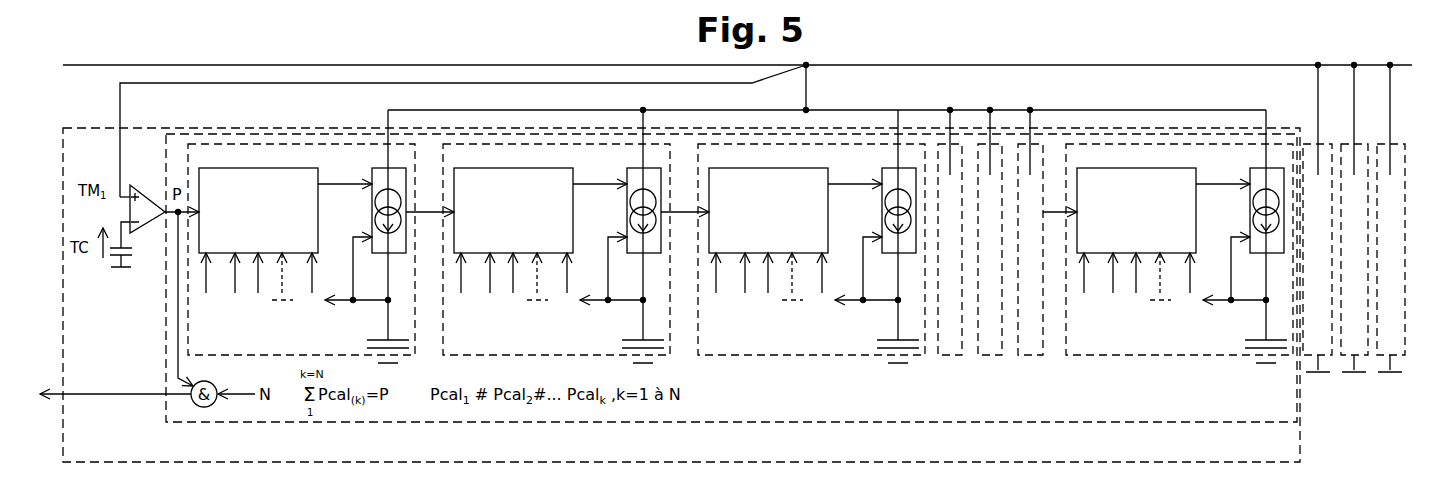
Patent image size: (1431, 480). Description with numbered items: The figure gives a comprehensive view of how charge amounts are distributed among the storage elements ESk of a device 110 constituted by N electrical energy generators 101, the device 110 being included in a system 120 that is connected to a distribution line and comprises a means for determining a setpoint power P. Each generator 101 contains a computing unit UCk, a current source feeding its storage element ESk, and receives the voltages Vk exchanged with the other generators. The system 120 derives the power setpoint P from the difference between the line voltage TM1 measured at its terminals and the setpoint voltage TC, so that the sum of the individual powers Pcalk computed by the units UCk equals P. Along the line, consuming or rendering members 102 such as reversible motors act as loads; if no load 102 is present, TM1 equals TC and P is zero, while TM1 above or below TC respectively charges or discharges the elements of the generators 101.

The electrical energy generator 101 is at (300, 350).
The electrical energy consuming or rendering member 102 is at (1312, 142).
The device 110 is at (1263, 411).
The system 120 is at (1263, 452).